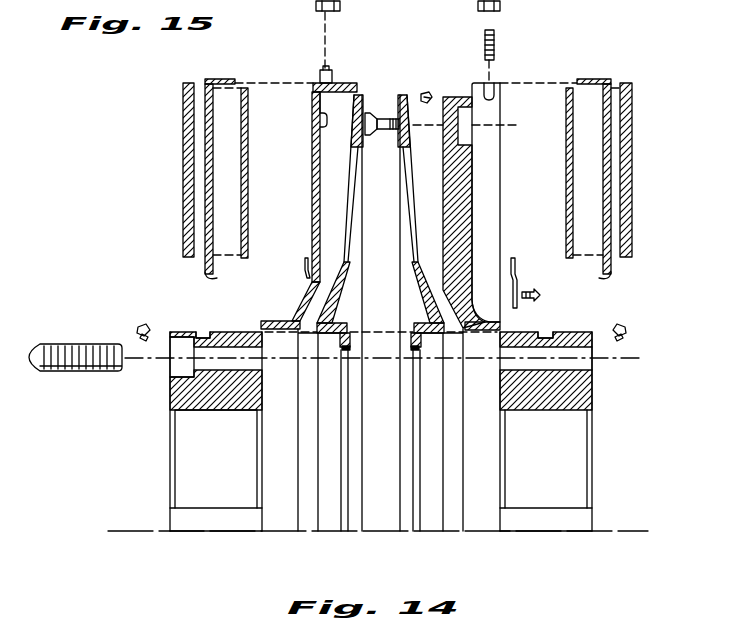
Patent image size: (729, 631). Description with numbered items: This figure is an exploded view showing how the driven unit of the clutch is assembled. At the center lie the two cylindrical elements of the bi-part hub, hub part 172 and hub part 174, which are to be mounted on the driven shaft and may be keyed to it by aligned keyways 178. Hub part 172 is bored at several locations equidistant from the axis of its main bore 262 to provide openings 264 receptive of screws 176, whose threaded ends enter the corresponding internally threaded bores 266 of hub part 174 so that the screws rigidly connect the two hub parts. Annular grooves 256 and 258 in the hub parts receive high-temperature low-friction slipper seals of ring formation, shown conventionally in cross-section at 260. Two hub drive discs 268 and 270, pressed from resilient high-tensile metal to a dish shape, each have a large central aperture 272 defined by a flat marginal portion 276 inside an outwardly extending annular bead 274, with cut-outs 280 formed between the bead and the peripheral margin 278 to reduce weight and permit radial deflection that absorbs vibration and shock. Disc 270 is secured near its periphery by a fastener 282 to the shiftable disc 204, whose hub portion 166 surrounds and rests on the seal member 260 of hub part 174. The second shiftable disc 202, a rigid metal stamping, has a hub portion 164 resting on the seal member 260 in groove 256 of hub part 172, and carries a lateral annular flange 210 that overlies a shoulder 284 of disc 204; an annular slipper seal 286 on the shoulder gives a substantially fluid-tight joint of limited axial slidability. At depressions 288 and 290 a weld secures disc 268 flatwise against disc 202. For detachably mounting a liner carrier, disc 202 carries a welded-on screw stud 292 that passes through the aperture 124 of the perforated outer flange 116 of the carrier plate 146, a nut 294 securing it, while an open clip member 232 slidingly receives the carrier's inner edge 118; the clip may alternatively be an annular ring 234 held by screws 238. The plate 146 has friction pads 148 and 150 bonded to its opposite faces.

The outer flange 116 is at (231, 80).
The inner edge 118 is at (216, 276).
The aperture 124 is at (603, 79).
The metal plate 146 is at (213, 167).
The primary friction pad 148 is at (183, 176).
The high-friction resilient pad 150 is at (249, 143).
The hub portion 164 is at (278, 320).
The hub portion 166 is at (493, 325).
The hub part 172 is at (173, 400).
The hub part 174 is at (598, 398).
The screws 176 is at (67, 344).
The keyways 178 is at (181, 520).
The shiftable disc 202 is at (312, 205).
The shiftable disc 204 is at (473, 180).
The lateral annular flange 210 is at (341, 83).
The clip member 232 is at (305, 263).
The clip member 234 is at (516, 270).
The screws 238 is at (619, 330).
The annular groove 256 is at (218, 332).
The annular groove 258 is at (543, 333).
The slipper seal 260 is at (217, 322).
The main bore 262 is at (187, 412).
The openings 264 is at (198, 362).
The bores 266 is at (592, 360).
The hub drive disc 268 is at (350, 287).
The hub drive disc 270 is at (412, 283).
The central aperture 272 is at (418, 378).
The annular bead 274 is at (430, 322).
The flat marginal portion 276 is at (412, 341).
The peripheral margin 278 is at (360, 112).
The cut-outs 280 is at (414, 210).
The fastener 282 is at (382, 133).
The shoulder 284 is at (455, 97).
The annular slipper seal 286 is at (426, 92).
The depression 288 is at (318, 119).
The depression 290 is at (354, 124).
The screw stud 292 is at (322, 76).
The nut 294 is at (340, 7).